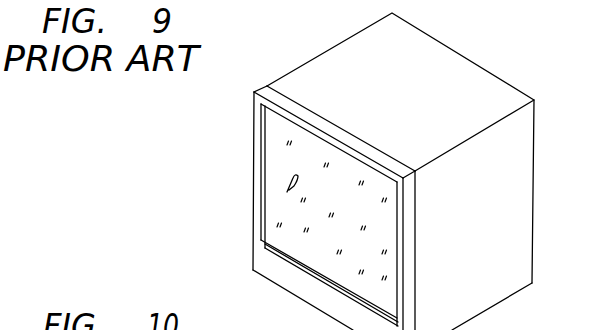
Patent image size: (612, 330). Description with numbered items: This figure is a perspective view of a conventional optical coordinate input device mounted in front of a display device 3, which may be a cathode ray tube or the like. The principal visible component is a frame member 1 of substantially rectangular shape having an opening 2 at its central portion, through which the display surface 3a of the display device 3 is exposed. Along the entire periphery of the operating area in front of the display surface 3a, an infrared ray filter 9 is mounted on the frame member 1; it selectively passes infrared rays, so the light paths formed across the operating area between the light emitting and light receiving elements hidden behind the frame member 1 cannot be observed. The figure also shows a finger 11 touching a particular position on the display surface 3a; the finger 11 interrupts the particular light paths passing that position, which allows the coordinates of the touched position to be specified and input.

The frame member 1 is at (251, 266).
The opening 2 is at (273, 225).
The display device 3 is at (513, 288).
The display surface 3a is at (277, 152).
The infrared ray filter 9 is at (263, 123).
The finger 11 is at (282, 187).